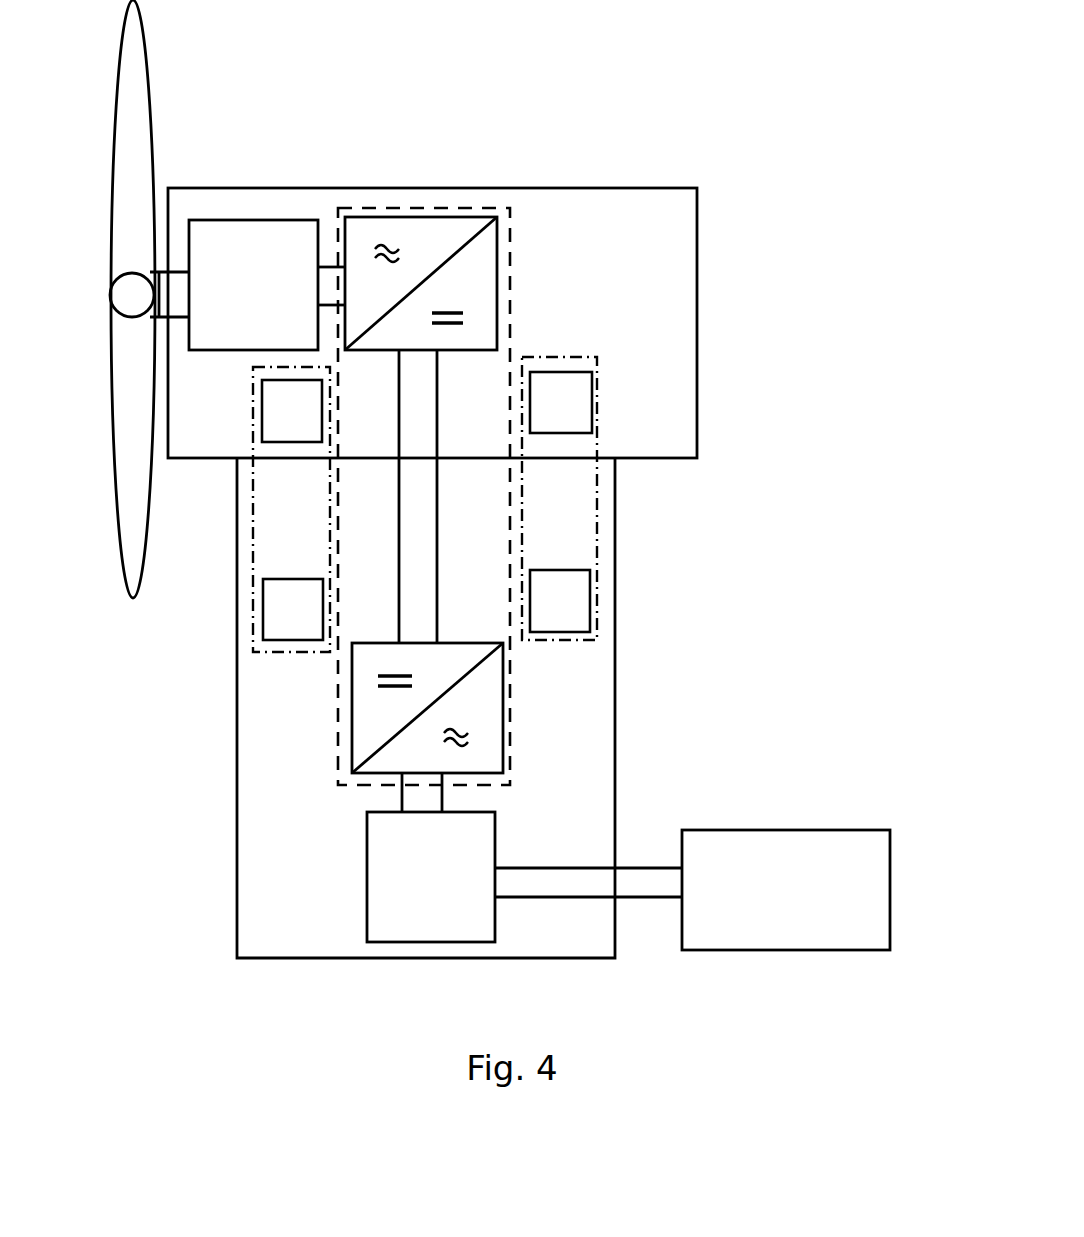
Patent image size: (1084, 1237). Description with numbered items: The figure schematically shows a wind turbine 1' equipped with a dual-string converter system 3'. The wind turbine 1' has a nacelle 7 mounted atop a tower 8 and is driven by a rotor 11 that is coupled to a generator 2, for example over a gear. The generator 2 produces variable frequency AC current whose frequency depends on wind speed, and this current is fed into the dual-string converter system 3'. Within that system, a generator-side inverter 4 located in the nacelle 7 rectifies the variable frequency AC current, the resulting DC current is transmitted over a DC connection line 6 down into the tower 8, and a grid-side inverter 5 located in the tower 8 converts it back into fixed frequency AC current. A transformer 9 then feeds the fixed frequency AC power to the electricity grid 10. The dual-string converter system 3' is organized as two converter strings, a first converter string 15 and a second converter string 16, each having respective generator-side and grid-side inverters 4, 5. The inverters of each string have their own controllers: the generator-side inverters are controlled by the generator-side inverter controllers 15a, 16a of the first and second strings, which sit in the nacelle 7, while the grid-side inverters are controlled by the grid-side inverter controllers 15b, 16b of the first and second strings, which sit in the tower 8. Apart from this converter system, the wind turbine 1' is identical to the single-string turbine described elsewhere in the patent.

The wind turbine 1' is at (368, 197).
The generator 2 is at (255, 220).
The dual-string converter system 3' is at (424, 443).
The generator-side inverter 4 is at (500, 282).
The grid-side inverter 5 is at (510, 707).
The DC connection line 6 is at (437, 497).
The nacelle 7 is at (697, 228).
The tower 8 is at (615, 710).
The transformer 9 is at (367, 876).
The electricity grid 10 is at (785, 830).
The rotor 11 is at (148, 63).
The first converter string 15 is at (558, 355).
The generator-side inverter controller of the first converter string 15a is at (592, 400).
The grid-side inverter controller of the first converter string 15b is at (590, 600).
The second converter string 16 is at (290, 652).
The generator-side inverter controller of the second converter string 16a is at (262, 410).
The grid-side inverter controller of the second converter string 16b is at (263, 610).